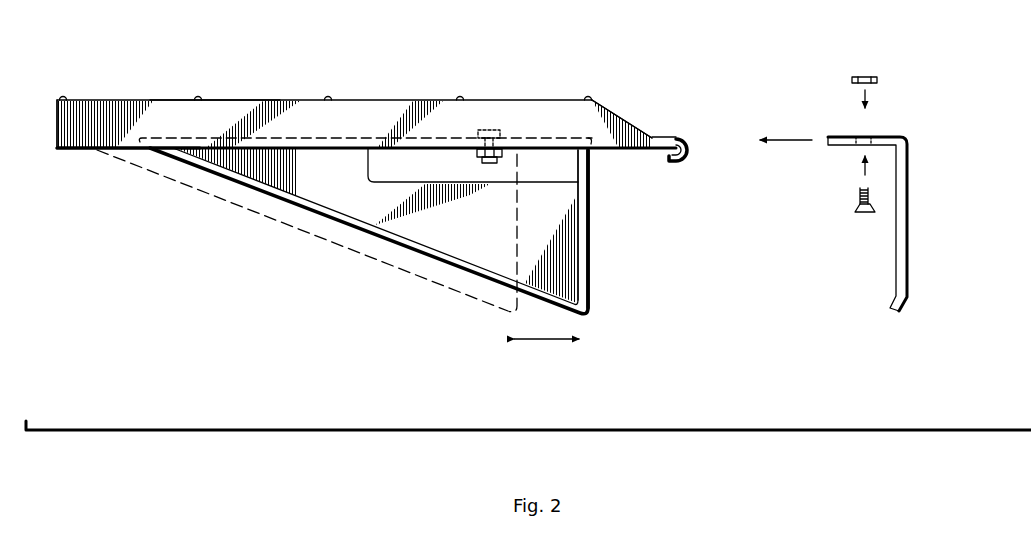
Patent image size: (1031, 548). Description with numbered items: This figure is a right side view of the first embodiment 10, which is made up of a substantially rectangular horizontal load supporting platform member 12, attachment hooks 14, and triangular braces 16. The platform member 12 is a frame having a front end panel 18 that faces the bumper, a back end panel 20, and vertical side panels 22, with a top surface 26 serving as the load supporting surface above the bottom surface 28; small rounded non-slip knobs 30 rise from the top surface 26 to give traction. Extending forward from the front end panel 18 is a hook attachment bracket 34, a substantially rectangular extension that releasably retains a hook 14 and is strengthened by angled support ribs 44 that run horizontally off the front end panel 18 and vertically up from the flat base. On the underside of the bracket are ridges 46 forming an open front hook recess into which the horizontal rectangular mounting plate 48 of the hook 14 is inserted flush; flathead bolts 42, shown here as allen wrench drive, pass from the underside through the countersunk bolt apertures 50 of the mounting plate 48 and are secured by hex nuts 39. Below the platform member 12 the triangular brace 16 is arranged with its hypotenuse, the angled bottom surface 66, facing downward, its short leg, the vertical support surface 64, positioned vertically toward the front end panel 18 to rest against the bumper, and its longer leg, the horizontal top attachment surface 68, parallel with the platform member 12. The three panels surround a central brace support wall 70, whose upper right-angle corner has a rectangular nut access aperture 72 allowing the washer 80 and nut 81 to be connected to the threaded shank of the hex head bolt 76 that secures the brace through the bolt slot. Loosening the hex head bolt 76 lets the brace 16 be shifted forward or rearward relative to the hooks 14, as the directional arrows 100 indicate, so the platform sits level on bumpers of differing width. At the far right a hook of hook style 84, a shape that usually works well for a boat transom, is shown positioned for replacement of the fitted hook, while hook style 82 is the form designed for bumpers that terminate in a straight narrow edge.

The first embodiment 10 is at (395, 97).
The platform member 12 is at (213, 98).
The attachment hook 14 is at (685, 140).
The triangular brace 16 is at (589, 277).
The front end panel 18 is at (645, 117).
The back end panel 20 is at (57, 112).
The side panel 22 is at (350, 125).
The top surface 26 is at (301, 99).
The bottom surface 28 is at (80, 149).
The non-slip knob 30 is at (65, 98).
The hook attachment bracket 34 is at (612, 120).
The hex nut 39 is at (863, 73).
The flathead bolt 42 is at (855, 211).
The angled support rib 44 is at (623, 117).
The ridge 46 is at (637, 152).
The mounting plate 48 is at (882, 137).
The countersunk bolt aperture 50 is at (863, 137).
The vertical support surface 64 is at (589, 222).
The angled bottom surface 66 is at (263, 195).
The top attachment surface 68 is at (181, 138).
The brace support wall 70 is at (358, 193).
The nut access aperture 72 is at (440, 167).
The hex head bolt 76 is at (489, 128).
The washer 80 is at (503, 153).
The nut 81 is at (499, 164).
The hook style 82 is at (667, 135).
The hook style 84 is at (910, 210).
The directional arrow 100 is at (550, 343).